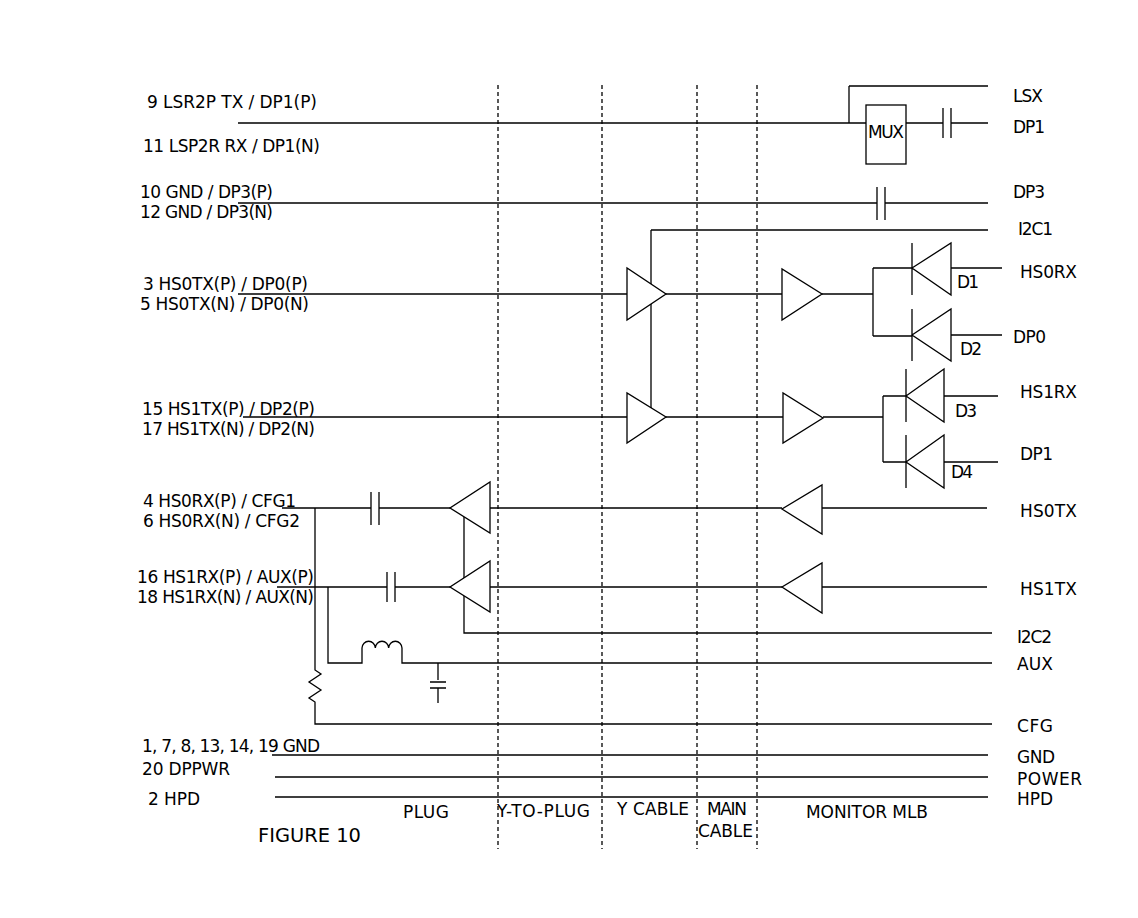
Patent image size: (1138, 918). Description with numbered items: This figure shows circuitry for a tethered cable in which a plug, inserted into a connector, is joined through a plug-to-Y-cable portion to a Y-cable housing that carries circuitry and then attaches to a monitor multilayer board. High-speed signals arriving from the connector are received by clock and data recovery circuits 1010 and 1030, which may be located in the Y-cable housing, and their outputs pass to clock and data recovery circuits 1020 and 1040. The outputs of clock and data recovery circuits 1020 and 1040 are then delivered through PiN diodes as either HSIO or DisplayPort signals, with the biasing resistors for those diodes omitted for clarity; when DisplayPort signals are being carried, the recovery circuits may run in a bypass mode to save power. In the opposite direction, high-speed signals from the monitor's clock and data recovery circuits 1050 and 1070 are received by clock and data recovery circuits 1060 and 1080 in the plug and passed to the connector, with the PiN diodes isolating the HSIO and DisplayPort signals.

The clock and data recovery circuit 1010 is at (634, 264).
The clock and data recovery circuit 1020 is at (817, 278).
The clock and data recovery circuit 1030 is at (637, 392).
The clock and data recovery circuit 1040 is at (815, 408).
The clock and data recovery circuit 1050 is at (790, 500).
The clock and data recovery circuit 1060 is at (462, 489).
The clock and data recovery circuit 1070 is at (821, 577).
The clock and data recovery circuit 1080 is at (459, 576).